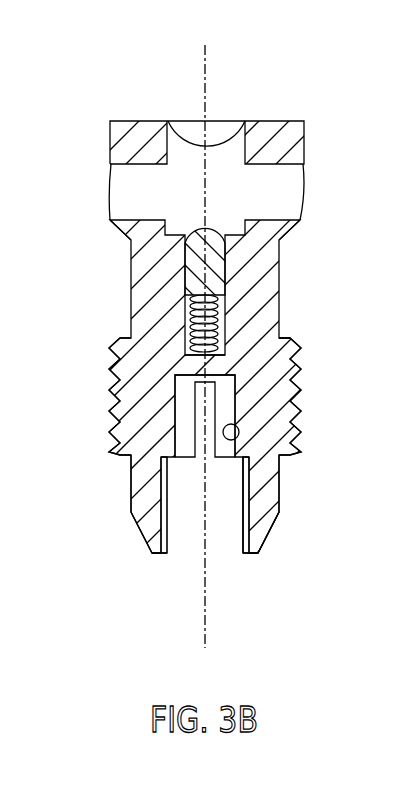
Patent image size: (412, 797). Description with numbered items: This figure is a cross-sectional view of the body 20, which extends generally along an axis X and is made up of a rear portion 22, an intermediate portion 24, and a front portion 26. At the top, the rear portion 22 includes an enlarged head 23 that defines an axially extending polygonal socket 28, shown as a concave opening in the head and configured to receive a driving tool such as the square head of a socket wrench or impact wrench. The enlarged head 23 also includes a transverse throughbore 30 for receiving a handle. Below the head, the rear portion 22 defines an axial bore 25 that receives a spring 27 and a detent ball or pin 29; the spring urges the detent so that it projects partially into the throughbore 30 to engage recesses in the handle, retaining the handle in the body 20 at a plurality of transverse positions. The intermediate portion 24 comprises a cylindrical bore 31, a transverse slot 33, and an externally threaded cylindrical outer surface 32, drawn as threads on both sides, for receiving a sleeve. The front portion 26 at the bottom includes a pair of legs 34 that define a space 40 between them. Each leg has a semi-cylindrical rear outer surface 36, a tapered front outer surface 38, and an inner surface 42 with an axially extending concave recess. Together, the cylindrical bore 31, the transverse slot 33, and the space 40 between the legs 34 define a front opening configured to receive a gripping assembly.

The body 20 is at (317, 102).
The rear portion 22 is at (120, 243).
The enlarged head 23 is at (110, 147).
The intermediate portion 24 is at (111, 372).
The axial bore 25 is at (224, 329).
The front portion 26 is at (130, 487).
The spring 27 is at (224, 333).
The polygonal socket 28 is at (168, 127).
The detent ball or pin 29 is at (212, 223).
The transverse throughbore 30 is at (120, 230).
The cylindrical bore 31 is at (243, 443).
The externally threaded cylindrical outer surface 32 is at (298, 417).
The transverse slot 33 is at (189, 440).
The legs 34 is at (151, 548).
The semi-cylindrical rear outer surface 36 is at (280, 488).
The tapered front outer surface 38 is at (266, 532).
The space 40 is at (176, 533).
The inner surface 42 is at (240, 540).